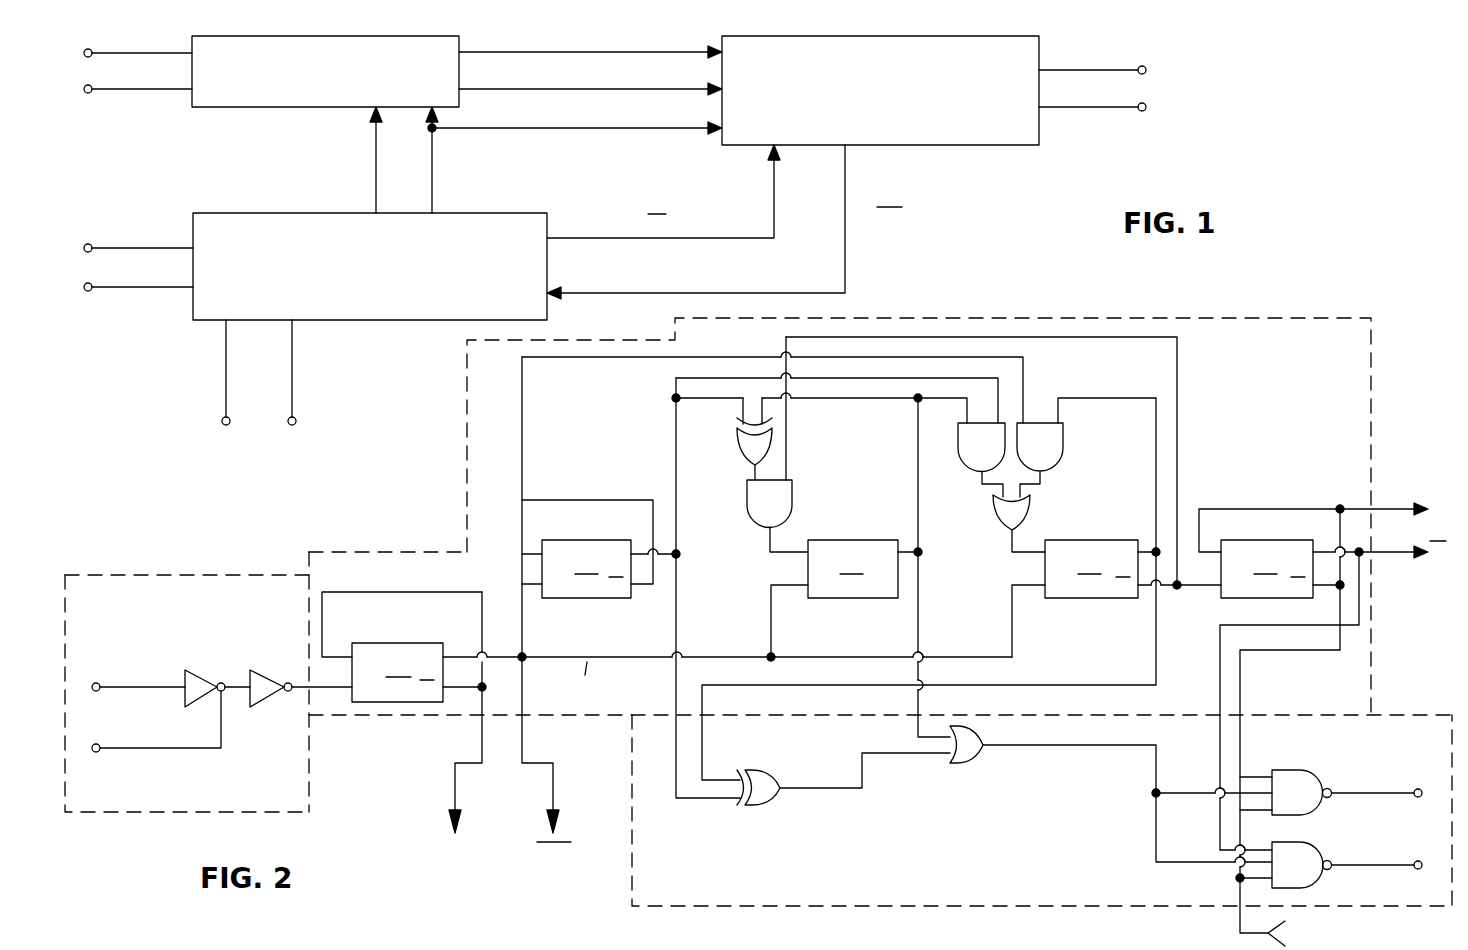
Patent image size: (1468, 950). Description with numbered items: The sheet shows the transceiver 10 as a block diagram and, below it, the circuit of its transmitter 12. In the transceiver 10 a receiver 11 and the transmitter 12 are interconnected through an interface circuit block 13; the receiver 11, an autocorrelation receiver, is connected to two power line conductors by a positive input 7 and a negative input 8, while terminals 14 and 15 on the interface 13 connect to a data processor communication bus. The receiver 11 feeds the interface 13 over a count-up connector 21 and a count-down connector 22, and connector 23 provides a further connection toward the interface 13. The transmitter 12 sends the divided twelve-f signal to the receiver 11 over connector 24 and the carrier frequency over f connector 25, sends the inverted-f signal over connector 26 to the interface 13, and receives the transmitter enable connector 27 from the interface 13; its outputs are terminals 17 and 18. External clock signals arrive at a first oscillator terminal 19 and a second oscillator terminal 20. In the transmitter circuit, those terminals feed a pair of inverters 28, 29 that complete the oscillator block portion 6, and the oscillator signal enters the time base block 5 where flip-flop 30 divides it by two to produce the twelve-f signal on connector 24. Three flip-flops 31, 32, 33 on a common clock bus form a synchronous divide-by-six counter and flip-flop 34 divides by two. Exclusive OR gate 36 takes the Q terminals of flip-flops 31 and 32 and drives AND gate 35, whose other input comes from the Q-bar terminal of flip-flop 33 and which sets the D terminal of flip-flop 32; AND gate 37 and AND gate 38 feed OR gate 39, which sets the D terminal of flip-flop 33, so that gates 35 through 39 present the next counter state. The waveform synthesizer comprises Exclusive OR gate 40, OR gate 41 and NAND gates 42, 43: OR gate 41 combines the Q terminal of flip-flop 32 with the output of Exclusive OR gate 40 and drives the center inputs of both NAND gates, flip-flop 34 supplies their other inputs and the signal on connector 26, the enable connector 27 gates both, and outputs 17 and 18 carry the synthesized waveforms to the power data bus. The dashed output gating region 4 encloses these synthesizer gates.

In FIG. 2, the output gating circuit 4 is at (628, 900).
In FIG. 2, the time base block 5 is at (1252, 316).
In FIG. 2, the oscillator block portion 6 is at (135, 812).
In FIG. 1, the positive input 7 is at (91, 49).
In FIG. 1, the negative input 8 is at (90, 93).
In FIG. 1, the transceiver 10 is at (891, 195).
In FIG. 1, the receiver 11 is at (252, 107).
In FIG. 1, the transmitter 12 is at (410, 320).
In FIG. 2, the transmitter 12 is at (374, 826).
In FIG. 1, the interface circuit block 13 is at (958, 145).
In FIG. 1, the terminal 14 is at (1140, 66).
In FIG. 1, the terminal 15 is at (1142, 111).
In FIG. 1, the output terminal 17 is at (88, 244).
In FIG. 2, the output terminal 17 is at (1418, 789).
In FIG. 1, the output terminal 18 is at (88, 291).
In FIG. 2, the output terminal 18 is at (1418, 869).
In FIG. 1, the first oscillator terminal 19 is at (222, 421).
In FIG. 2, the first oscillator terminal 19 is at (96, 683).
In FIG. 1, the second oscillator terminal 20 is at (296, 421).
In FIG. 2, the second oscillator terminal 20 is at (96, 752).
In FIG. 1, the count-up connector 21 is at (650, 52).
In FIG. 1, the count-down connector 22 is at (652, 89).
In FIG. 1, the connector 23 is at (654, 128).
In FIG. 1, the connector 24 is at (376, 156).
In FIG. 2, the connector 24 is at (455, 780).
In FIG. 1, the f connector 25 is at (432, 150).
In FIG. 2, the f connector 25 is at (1397, 509).
In FIG. 1, the f̄ connector 26 is at (735, 238).
In FIG. 2, the f̄ connector 26 is at (1397, 552).
In FIG. 1, the transmitter enable connector 27 is at (810, 293).
In FIG. 2, the transmitter enable connector 27 is at (1240, 918).
In FIG. 2, the inverter 28 is at (205, 670).
In FIG. 2, the inverter 29 is at (281, 668).
In FIG. 2, the flip-flop 30 is at (422, 712).
In FIG. 2, the flip-flop 31 is at (599, 549).
In FIG. 2, the flip-flop 32 is at (844, 598).
In FIG. 2, the flip-flop 33 is at (1116, 598).
In FIG. 2, the flip-flop 34 is at (1281, 551).
In FIG. 2, the AND gate 35 is at (792, 512).
In FIG. 2, the Exclusive OR gate 36 is at (737, 448).
In FIG. 2, the AND gate 37 is at (965, 465).
In FIG. 2, the AND gate 38 is at (1063, 458).
In FIG. 2, the OR gate 39 is at (995, 518).
In FIG. 2, the Exclusive OR gate 40 is at (765, 805).
In FIG. 2, the OR gate 41 is at (975, 763).
In FIG. 2, the NAND gate 42 is at (1303, 770).
In FIG. 2, the NAND gate 43 is at (1303, 842).